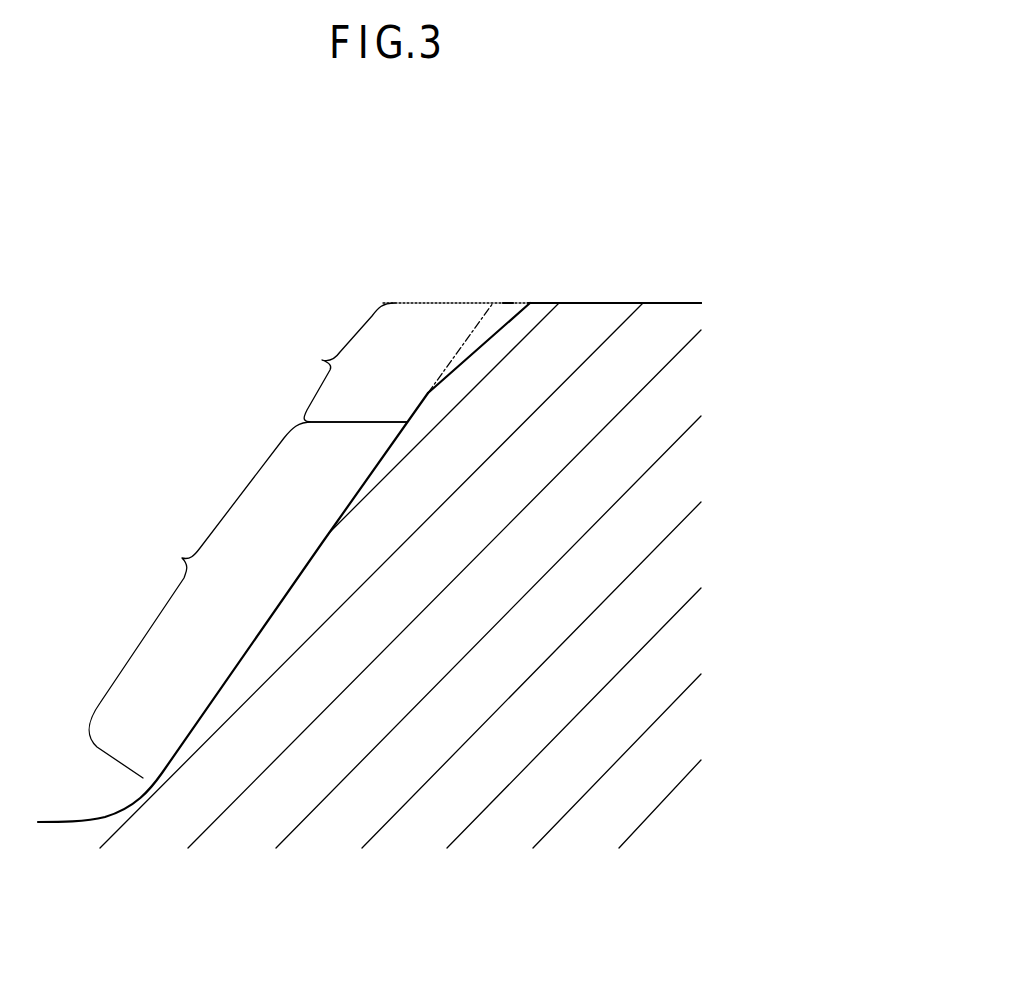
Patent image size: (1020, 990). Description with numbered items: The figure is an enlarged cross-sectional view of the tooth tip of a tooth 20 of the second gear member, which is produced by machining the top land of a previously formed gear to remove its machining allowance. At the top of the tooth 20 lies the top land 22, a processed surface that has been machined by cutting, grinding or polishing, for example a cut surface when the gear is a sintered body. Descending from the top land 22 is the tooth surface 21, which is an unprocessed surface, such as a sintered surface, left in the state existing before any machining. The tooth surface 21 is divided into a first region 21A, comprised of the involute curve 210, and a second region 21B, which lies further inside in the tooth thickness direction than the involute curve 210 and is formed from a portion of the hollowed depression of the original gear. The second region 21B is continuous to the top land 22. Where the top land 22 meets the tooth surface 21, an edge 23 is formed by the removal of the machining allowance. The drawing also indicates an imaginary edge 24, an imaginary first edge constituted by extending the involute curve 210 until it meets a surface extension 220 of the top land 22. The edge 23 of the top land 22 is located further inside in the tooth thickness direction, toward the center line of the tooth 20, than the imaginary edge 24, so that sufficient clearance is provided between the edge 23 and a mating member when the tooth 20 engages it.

The tooth 20 is at (605, 261).
The tooth surface 21 is at (357, 489).
The first region 21A is at (248, 600).
The second region 21B is at (342, 362).
The top land 22 is at (622, 303).
The edge 23 is at (536, 291).
The imaginary edge 24 is at (494, 303).
The involute curve 210 is at (460, 353).
The surface extension 220 is at (508, 303).